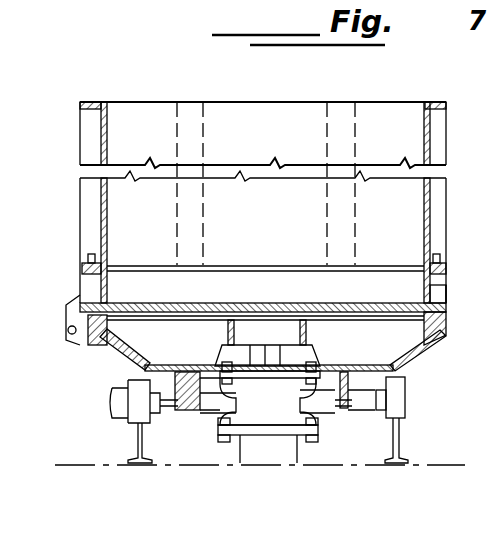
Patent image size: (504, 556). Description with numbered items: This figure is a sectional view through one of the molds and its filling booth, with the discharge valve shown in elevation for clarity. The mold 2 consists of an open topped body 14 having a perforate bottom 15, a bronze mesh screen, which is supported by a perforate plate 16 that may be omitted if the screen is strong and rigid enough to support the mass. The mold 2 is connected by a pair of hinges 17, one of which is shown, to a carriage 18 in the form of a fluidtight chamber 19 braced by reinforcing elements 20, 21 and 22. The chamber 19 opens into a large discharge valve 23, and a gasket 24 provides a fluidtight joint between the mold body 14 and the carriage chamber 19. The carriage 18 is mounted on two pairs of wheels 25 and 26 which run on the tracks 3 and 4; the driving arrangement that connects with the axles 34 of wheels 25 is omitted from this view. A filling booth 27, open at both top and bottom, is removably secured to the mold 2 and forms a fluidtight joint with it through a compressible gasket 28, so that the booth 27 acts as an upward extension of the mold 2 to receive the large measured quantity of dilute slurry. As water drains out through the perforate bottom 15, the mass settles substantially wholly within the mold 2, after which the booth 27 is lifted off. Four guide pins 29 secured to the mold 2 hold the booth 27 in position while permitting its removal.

The mold 2 is at (468, 291).
The track 3 is at (398, 443).
The track 4 is at (137, 447).
The open topped body 14 is at (438, 300).
The perforate bottom 15 is at (350, 304).
The perforate plate 16 is at (238, 304).
The hinge 17 is at (65, 308).
The carriage 18 is at (92, 343).
The fluidtight chamber 19 is at (128, 360).
The reinforcing element 20 is at (269, 350).
The reinforcing element 21 is at (250, 352).
The reinforcing element 22 is at (290, 352).
The discharge valve 23 is at (312, 425).
The gasket 24 is at (448, 318).
The wheel 25 is at (116, 402).
The wheel 26 is at (402, 396).
The filling booth 27 is at (152, 102).
The compressible gasket 28 is at (440, 266).
The guide pin 29 is at (440, 255).
The axle 34 is at (368, 398).